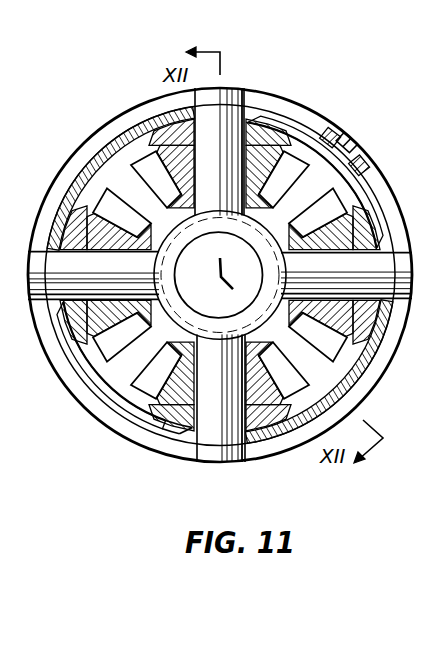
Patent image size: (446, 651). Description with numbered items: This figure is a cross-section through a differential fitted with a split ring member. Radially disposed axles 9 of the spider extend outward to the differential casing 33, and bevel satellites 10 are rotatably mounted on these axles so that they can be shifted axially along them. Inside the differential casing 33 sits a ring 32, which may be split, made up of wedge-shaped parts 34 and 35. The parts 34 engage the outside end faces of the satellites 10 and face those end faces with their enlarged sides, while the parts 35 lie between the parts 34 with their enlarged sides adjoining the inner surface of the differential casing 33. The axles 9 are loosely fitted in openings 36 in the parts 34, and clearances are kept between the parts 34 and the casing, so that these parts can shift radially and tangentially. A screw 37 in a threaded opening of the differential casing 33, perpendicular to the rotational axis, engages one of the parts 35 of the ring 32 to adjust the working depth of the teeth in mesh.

The axles 9 is at (400, 258).
The bevel satellites 10 is at (258, 178).
The ring 32 is at (368, 181).
The differential casing 33 is at (293, 95).
The wedge-shaped parts 34 is at (167, 432).
The wedge-shaped parts 35 is at (347, 383).
The openings 36 is at (246, 120).
The screw 37 is at (357, 138).